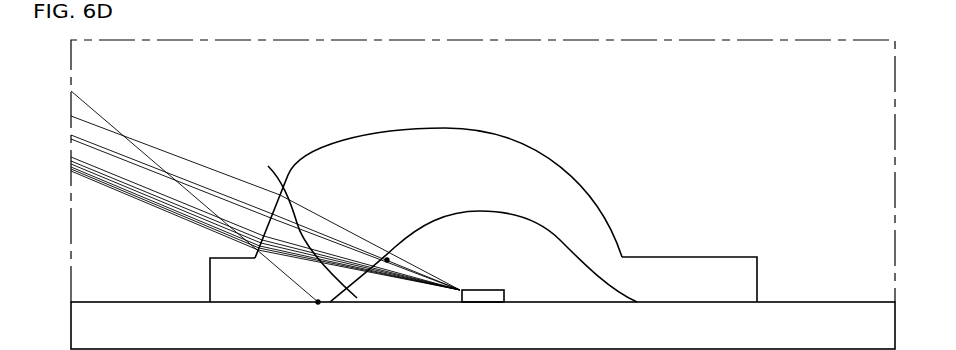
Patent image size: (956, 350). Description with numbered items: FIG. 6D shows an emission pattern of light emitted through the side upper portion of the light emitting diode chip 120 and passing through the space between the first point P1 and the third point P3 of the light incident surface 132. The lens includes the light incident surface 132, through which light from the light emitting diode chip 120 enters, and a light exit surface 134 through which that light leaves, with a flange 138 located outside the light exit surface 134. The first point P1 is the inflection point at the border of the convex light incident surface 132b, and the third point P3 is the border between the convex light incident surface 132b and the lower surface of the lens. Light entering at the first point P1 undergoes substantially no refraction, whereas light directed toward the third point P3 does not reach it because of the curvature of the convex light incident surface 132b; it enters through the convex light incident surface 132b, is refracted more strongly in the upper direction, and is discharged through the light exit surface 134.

The light emitting diode chip 120 is at (498, 291).
The light incident surface 132 is at (547, 223).
The convex light incident surface 132b is at (268, 166).
The light exit surface 134 is at (540, 160).
The flange 138 is at (216, 273).
The first point P1 is at (387, 260).
The third point P3 is at (318, 303).